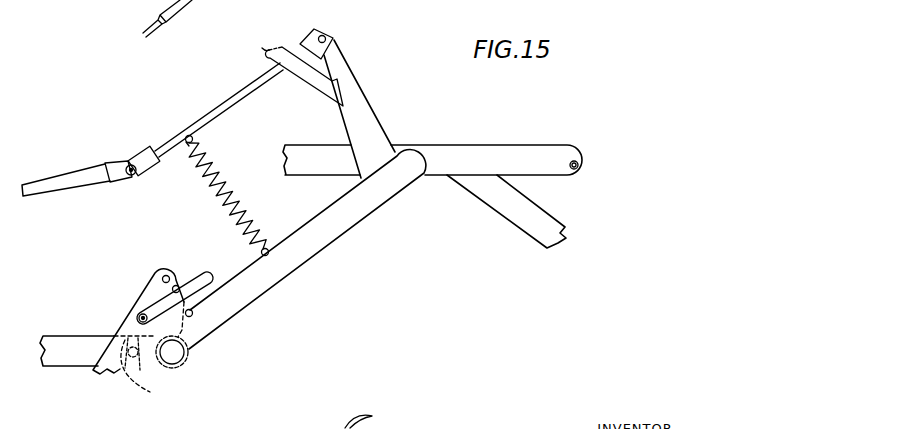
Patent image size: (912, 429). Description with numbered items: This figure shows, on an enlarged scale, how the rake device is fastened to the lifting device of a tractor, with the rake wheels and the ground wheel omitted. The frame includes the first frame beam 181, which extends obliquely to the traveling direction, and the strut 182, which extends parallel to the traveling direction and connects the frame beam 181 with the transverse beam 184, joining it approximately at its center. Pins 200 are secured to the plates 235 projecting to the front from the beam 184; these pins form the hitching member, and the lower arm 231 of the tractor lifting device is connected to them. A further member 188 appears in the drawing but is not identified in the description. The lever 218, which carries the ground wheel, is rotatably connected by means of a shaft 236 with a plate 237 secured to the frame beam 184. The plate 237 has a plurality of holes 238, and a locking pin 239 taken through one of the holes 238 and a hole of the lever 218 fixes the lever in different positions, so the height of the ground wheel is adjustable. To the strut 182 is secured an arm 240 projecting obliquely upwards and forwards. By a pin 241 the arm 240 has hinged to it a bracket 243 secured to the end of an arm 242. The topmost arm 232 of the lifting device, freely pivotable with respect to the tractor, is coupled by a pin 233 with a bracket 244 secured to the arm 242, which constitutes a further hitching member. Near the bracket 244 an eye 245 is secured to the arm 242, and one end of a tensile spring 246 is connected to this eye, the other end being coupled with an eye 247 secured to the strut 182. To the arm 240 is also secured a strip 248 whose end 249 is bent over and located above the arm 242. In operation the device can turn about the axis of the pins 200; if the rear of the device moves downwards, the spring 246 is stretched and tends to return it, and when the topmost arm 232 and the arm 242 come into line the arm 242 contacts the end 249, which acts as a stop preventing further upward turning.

The first frame beam 181 is at (527, 155).
The strut 182 is at (330, 230).
The transverse beam 184 is at (185, 364).
The arm 188 is at (525, 218).
The pins 200 is at (142, 379).
The lever 218 is at (117, 368).
The lower arm 231 is at (55, 345).
The topmost arm 232 is at (47, 182).
The pin 233 is at (135, 184).
The plates 235 is at (148, 358).
The shaft 236 is at (139, 317).
The plate 237 is at (163, 274).
The holes 238 is at (177, 284).
The locking pin 239 is at (210, 280).
The arm 240 is at (371, 123).
The pin 241 is at (326, 36).
The arm 242 is at (226, 104).
The bracket 243 is at (306, 40).
The bracket 244 is at (148, 152).
The eye 245 is at (197, 140).
The tensile spring 246 is at (214, 184).
The eye 247 is at (268, 248).
The strip 248 is at (308, 72).
The end 249 is at (262, 48).